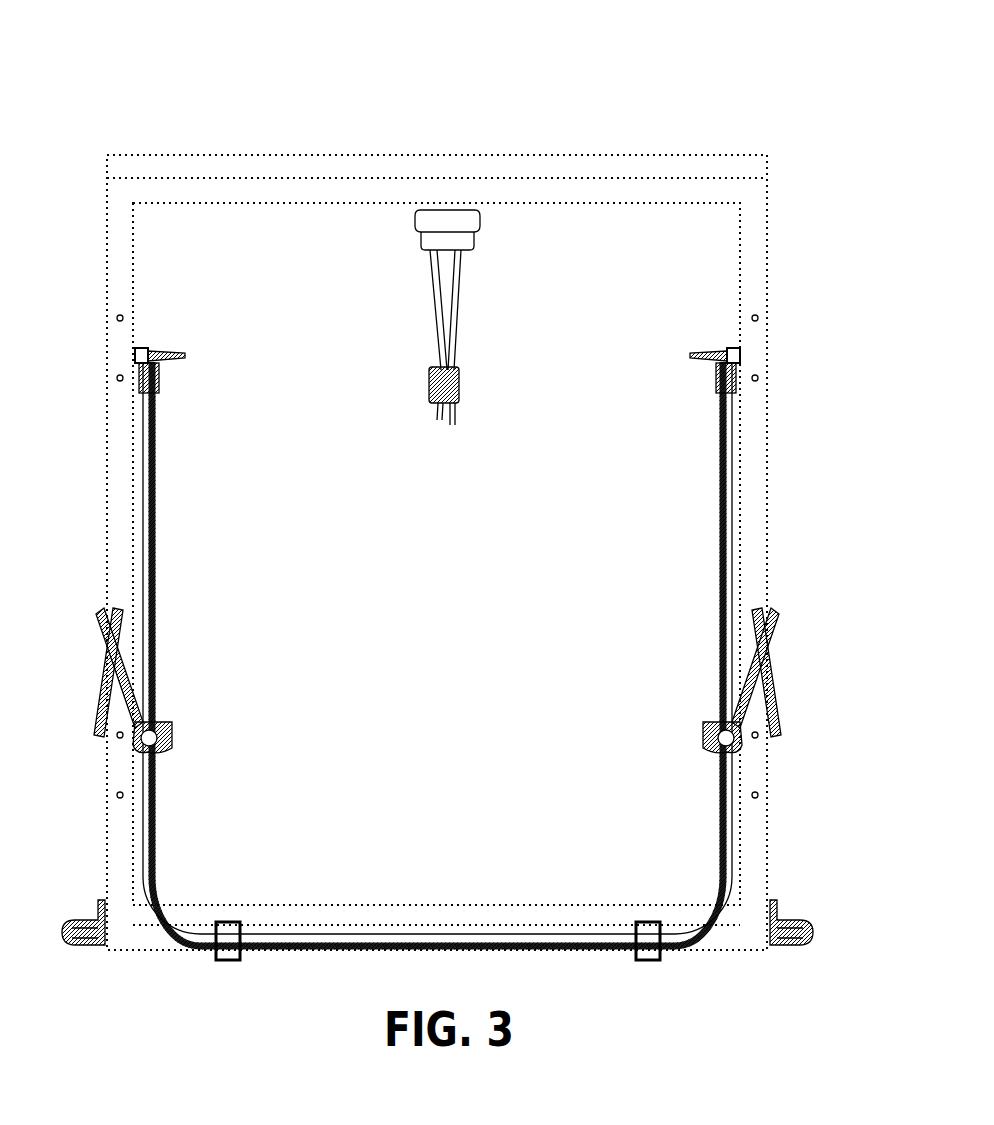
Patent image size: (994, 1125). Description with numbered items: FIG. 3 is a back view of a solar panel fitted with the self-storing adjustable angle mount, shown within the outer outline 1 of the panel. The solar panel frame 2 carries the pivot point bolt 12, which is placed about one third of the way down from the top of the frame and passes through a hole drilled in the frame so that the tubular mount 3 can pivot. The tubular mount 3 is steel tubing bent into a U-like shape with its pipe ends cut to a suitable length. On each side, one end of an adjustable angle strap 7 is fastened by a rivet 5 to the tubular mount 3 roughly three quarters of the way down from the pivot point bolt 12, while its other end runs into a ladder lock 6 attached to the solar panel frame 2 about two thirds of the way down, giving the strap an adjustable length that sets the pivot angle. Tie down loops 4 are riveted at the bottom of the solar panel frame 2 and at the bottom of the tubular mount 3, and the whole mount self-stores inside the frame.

The frame 1 is at (347, 232).
The solar panel frame 2 is at (768, 150).
The tubular mount 3 is at (440, 930).
The tie down loops 4 is at (88, 962).
The rivet 5 is at (95, 620).
The ladder lock 6 is at (124, 622).
The adjustable angle strap 7 is at (135, 653).
The pivot point bolt 12 is at (203, 356).